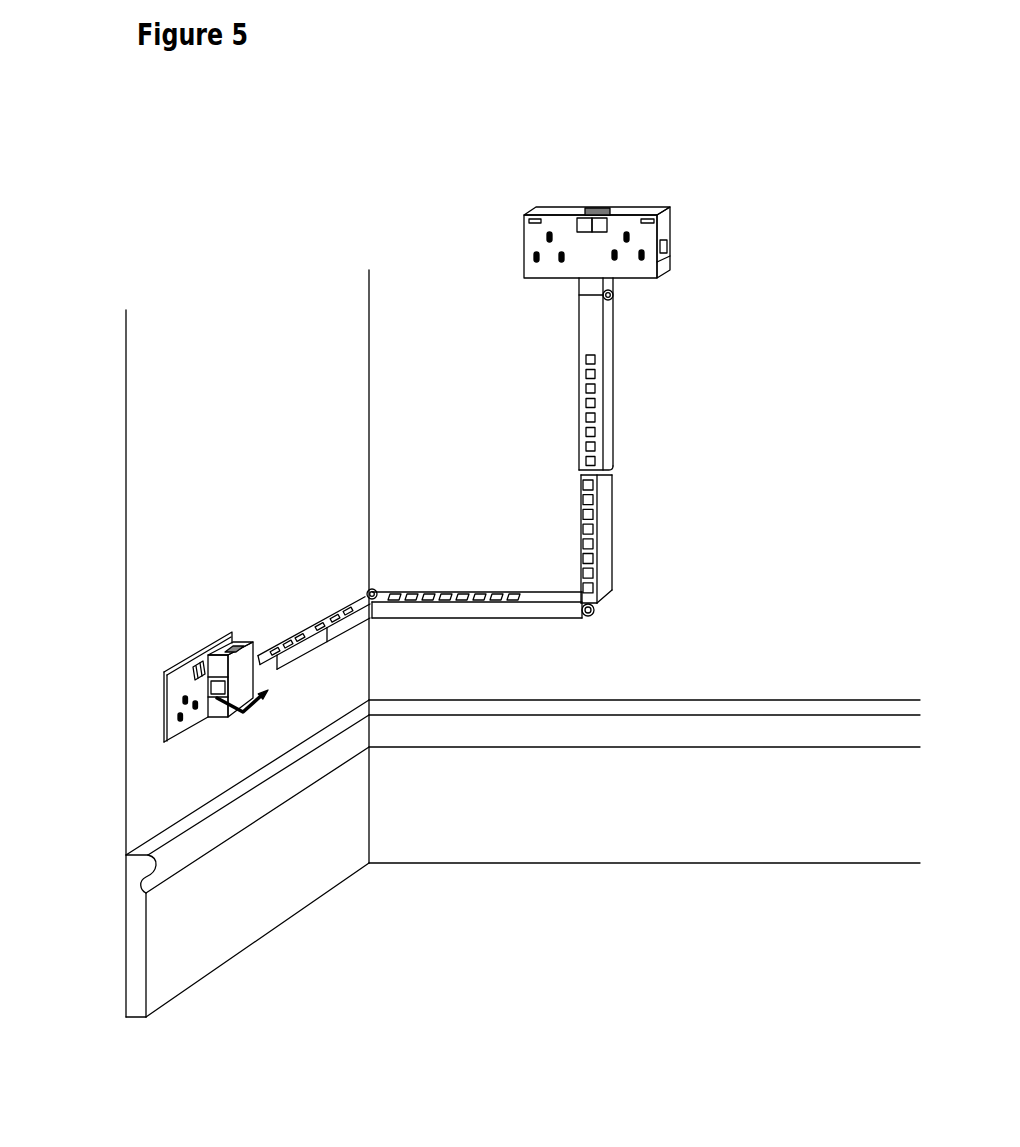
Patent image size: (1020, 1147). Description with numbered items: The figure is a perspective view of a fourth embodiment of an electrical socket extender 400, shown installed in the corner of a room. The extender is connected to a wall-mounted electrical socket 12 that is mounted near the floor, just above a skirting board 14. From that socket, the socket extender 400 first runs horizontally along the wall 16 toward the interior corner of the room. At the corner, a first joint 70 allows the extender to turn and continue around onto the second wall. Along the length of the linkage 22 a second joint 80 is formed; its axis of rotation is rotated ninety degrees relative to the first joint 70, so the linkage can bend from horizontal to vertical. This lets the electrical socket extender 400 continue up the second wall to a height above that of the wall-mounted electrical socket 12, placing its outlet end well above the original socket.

The wall-mounted electrical socket 12 is at (192, 715).
The skirting board 14 is at (272, 863).
The wall 16 is at (313, 365).
The linkage 22 is at (328, 594).
The first joint 70 is at (372, 592).
The second joint 80 is at (595, 608).
The electrical socket extender 400 is at (295, 521).